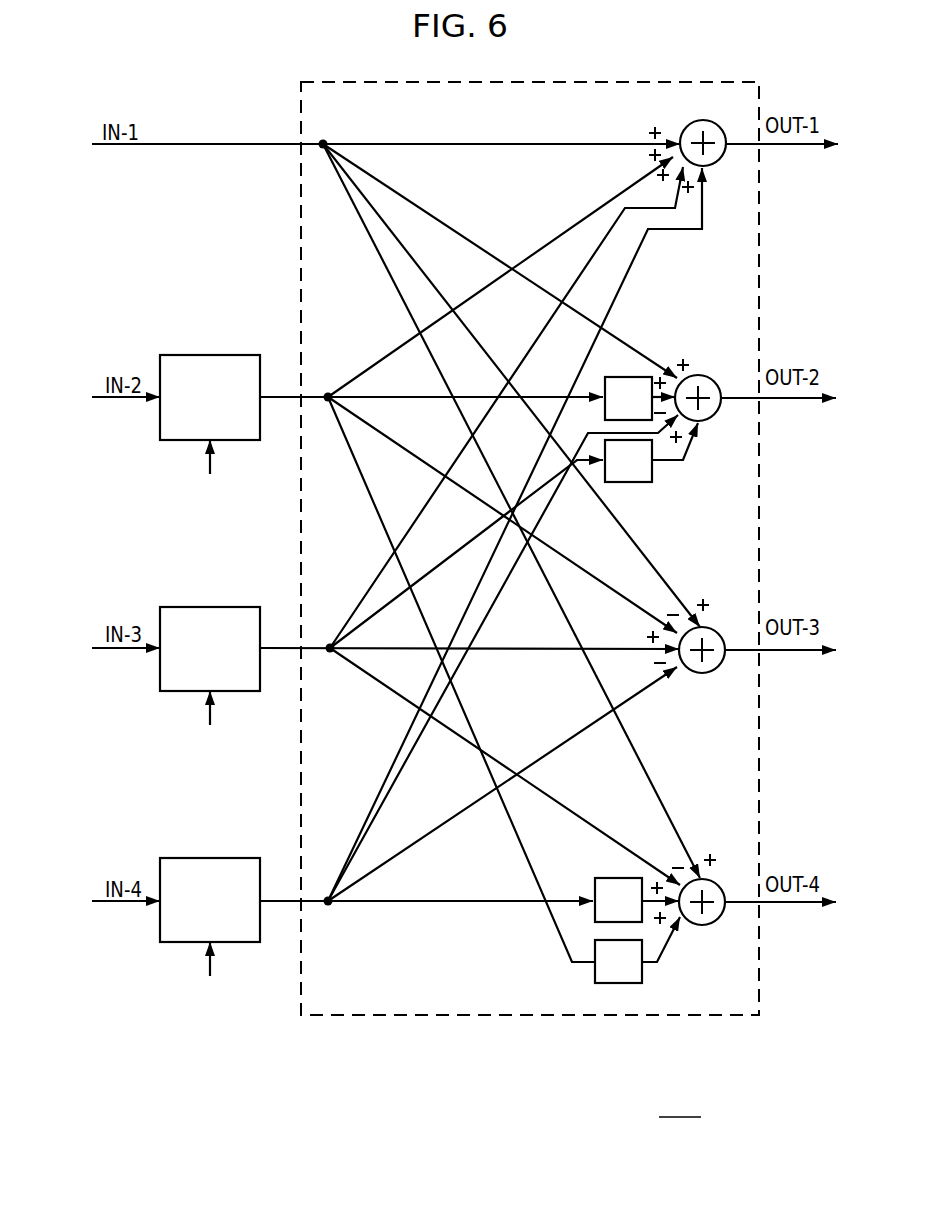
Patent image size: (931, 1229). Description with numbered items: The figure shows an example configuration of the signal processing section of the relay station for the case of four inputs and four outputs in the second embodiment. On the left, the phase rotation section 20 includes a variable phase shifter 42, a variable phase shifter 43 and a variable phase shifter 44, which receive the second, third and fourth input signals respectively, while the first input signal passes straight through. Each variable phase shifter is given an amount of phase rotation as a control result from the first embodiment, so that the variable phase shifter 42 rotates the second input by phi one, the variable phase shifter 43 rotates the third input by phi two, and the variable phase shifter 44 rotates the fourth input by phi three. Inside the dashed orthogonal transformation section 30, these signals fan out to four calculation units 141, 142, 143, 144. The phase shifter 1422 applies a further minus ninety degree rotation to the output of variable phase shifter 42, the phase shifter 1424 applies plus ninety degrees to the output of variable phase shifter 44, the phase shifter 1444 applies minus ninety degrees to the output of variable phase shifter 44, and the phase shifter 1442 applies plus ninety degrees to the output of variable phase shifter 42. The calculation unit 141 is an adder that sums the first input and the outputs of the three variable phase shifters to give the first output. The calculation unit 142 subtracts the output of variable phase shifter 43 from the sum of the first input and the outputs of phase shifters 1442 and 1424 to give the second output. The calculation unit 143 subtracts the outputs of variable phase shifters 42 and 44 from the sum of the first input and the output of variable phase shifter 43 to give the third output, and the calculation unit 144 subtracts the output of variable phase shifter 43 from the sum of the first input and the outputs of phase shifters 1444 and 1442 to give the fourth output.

The phase rotation section 20 is at (248, 1045).
The orthogonal transformation section 30 is at (471, 1045).
The variable phase shifter 42 is at (210, 355).
The variable phase shifter 43 is at (210, 607).
The variable phase shifter 44 is at (210, 858).
The calculation unit 141 is at (703, 122).
The calculation unit 142 is at (700, 375).
The calculation unit 143 is at (720, 626).
The calculation unit 144 is at (737, 868).
The phase shifter 1422 is at (640, 376).
The phase shifter 1424 is at (624, 483).
The phase shifter 1442 is at (595, 969).
The phase shifter 1444 is at (625, 878).